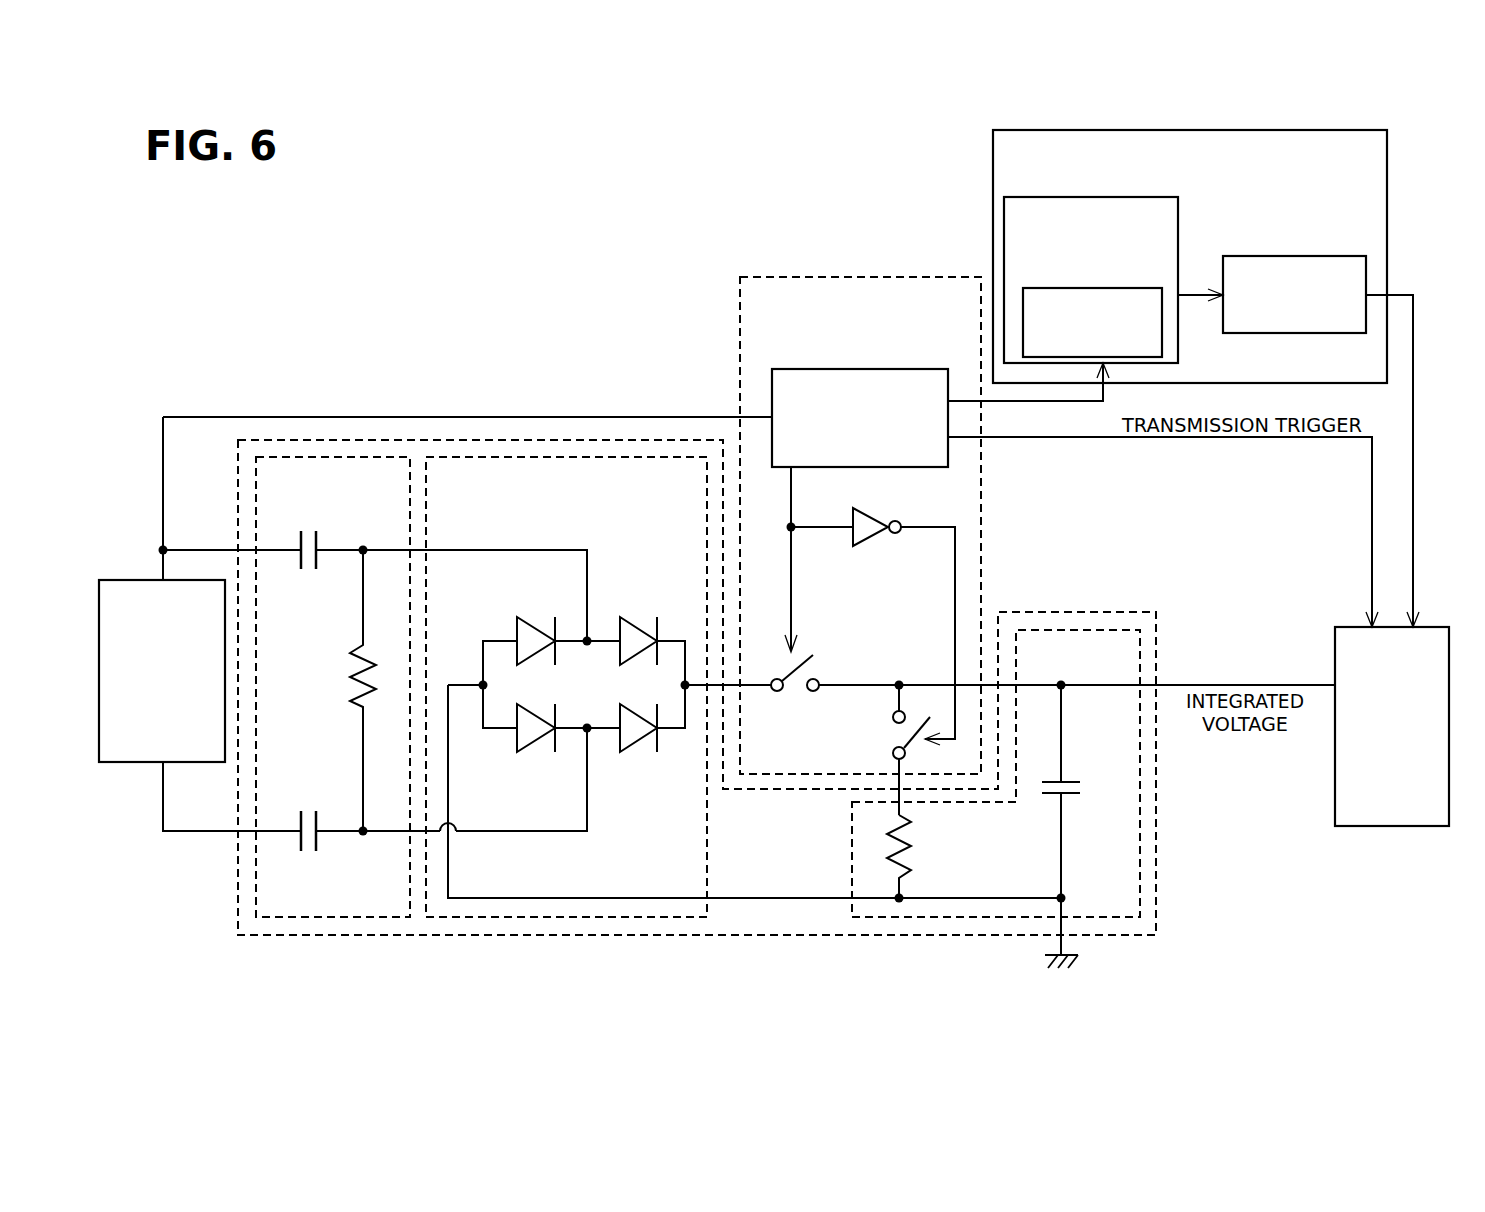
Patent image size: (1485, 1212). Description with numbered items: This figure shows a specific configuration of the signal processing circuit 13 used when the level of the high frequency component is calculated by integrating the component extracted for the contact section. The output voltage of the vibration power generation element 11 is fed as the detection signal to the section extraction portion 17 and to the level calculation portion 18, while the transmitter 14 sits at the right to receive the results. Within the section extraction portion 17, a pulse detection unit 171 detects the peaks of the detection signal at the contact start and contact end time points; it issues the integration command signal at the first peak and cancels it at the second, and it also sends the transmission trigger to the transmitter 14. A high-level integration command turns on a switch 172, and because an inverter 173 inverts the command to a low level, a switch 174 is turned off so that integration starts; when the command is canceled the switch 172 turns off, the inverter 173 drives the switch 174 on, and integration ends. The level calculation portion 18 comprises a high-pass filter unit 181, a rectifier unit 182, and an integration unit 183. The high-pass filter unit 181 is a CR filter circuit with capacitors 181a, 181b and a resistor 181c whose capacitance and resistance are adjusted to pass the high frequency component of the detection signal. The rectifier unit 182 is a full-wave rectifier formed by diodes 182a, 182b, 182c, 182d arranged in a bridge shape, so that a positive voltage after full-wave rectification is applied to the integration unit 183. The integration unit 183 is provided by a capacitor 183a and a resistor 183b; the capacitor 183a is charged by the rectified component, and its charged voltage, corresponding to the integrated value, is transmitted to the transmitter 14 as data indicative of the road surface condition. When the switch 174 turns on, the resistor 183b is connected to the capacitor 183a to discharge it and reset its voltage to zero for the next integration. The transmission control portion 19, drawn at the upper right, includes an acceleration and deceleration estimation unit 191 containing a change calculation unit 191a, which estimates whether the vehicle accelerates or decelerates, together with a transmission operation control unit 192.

The vibration power generation element 11 is at (143, 580).
The signal processing circuit 13 is at (465, 352).
The transmitter 14 is at (1437, 627).
The section extraction portion 17 is at (922, 277).
The pulse detection unit 171 is at (790, 369).
The switch 172 is at (808, 655).
The inverter 173 is at (875, 546).
The switch 174 is at (900, 742).
The level calculation portion 18 is at (275, 940).
The high-pass filter unit 181 is at (365, 440).
The capacitor 181a is at (300, 570).
The capacitor 181b is at (290, 815).
The resistor 181c is at (355, 690).
The rectifier unit 182 is at (645, 440).
The diode 182a is at (530, 617).
The diode 182b is at (633, 617).
The diode 182c is at (530, 752).
The diode 182d is at (633, 752).
The integration unit 183 is at (1140, 887).
The capacitor 183a is at (1070, 782).
The resistor 183b is at (905, 845).
The transmission control portion 19 is at (1387, 234).
The acceleration and deceleration estimation unit 191 is at (1040, 197).
The change calculation unit 191a is at (1162, 335).
The transmission operation control unit 192 is at (1338, 245).